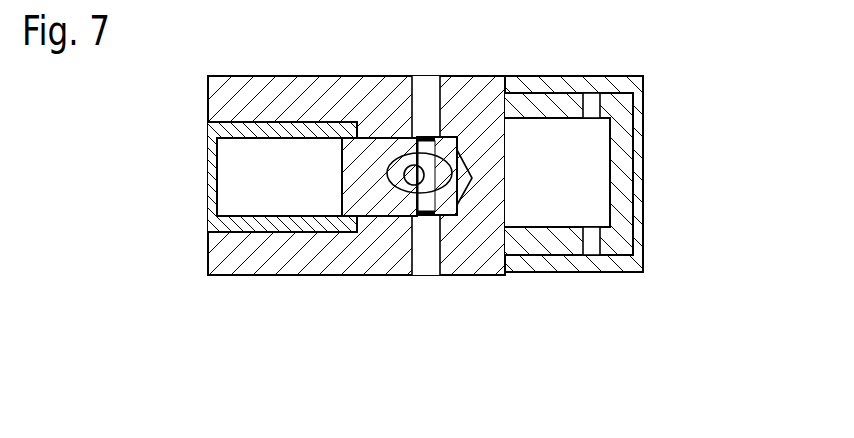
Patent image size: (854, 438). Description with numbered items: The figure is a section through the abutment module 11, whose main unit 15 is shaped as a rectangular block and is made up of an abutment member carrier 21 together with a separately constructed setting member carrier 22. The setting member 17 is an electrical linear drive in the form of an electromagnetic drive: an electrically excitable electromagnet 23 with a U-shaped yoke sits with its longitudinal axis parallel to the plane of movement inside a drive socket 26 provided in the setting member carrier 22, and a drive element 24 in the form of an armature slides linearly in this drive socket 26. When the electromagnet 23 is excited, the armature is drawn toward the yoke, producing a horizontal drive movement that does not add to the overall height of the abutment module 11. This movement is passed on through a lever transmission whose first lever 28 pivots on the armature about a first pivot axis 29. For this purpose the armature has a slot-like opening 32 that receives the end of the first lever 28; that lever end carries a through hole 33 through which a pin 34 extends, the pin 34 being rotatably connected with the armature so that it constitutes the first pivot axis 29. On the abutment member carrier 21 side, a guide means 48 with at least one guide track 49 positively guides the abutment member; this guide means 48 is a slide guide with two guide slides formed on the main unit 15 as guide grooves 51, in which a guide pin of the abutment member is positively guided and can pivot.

The abutment module 11 is at (697, 121).
The main unit 15 is at (332, 277).
The setting member 17 is at (205, 217).
The abutment member carrier 21 is at (633, 262).
The setting member carrier 22 is at (245, 262).
The electromagnet 23 is at (215, 155).
The drive element 24 is at (380, 202).
The drive socket 26 is at (258, 122).
The first lever 28 is at (457, 137).
The first pivot axis 29 is at (428, 137).
The slot-like opening 32 is at (402, 167).
The through hole 33 is at (428, 215).
The pin 34 is at (440, 215).
The guide means 48 is at (605, 90).
The guide track 49 is at (589, 92).
The guide grooves 51 is at (590, 100).